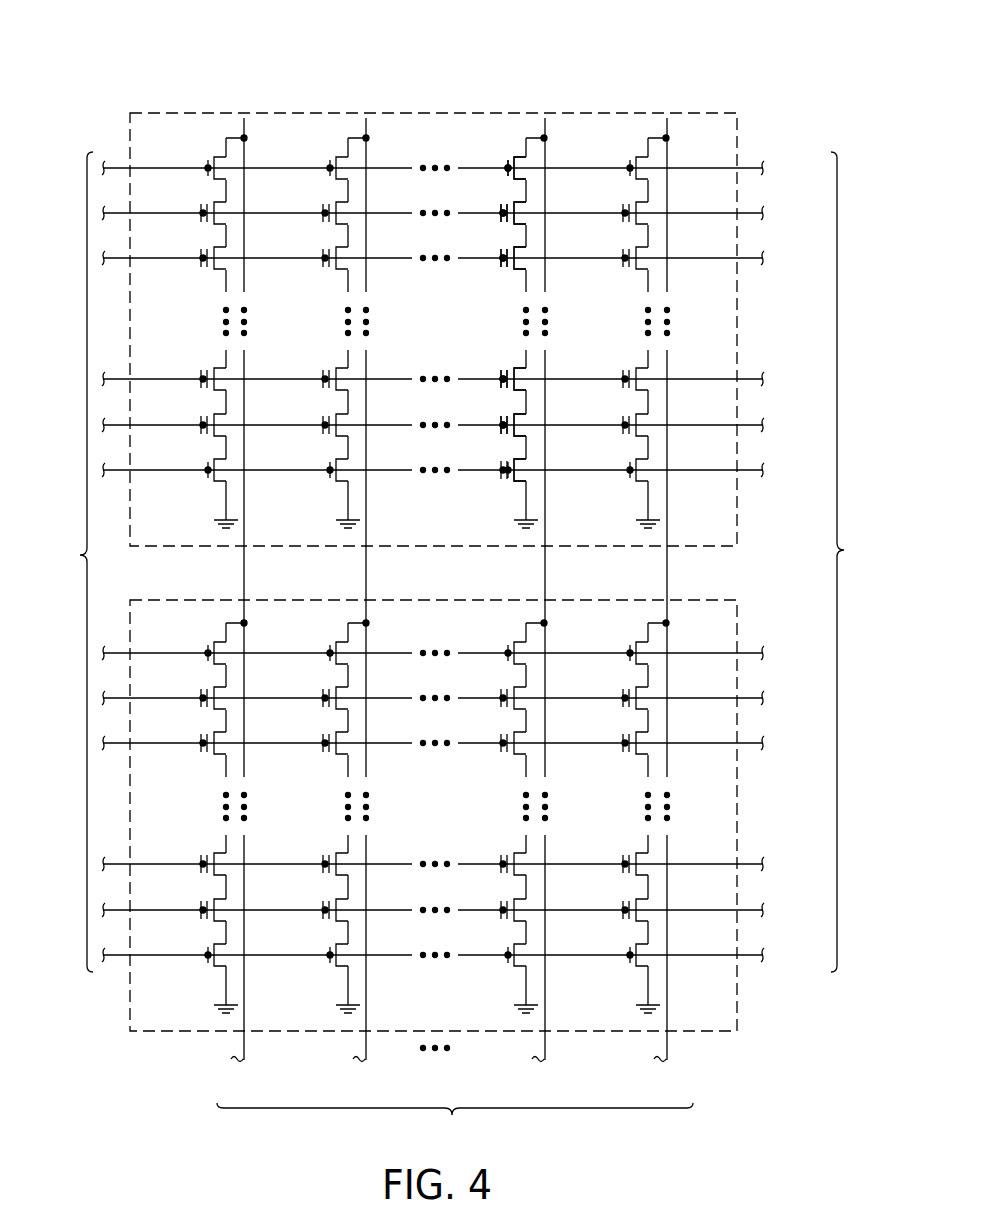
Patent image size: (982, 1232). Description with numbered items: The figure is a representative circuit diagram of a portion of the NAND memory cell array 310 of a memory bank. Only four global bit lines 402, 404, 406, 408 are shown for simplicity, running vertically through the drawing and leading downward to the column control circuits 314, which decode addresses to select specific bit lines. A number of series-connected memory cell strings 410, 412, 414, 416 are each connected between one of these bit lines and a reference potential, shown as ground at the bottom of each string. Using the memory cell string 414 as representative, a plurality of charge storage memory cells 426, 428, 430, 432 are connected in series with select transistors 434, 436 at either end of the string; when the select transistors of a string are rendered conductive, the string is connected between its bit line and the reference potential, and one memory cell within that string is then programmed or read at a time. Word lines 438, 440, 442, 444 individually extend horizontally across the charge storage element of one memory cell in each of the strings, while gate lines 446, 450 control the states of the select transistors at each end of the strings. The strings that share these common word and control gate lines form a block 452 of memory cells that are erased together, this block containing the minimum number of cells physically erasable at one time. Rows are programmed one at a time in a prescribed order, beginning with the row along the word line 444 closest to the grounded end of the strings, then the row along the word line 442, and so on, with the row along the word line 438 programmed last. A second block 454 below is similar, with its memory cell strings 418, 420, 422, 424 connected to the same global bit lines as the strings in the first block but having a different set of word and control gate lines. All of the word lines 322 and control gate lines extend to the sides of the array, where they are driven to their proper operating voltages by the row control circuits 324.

The memory cell array 310 is at (162, 77).
The block 452 is at (408, 103).
The second block 454 is at (523, 1038).
The global bit line 402 is at (246, 157).
The global bit line 404 is at (368, 157).
The global bit line 406 is at (546, 157).
The global bit line 408 is at (669, 156).
The memory cell string 410 is at (210, 352).
The memory cell string 412 is at (332, 352).
The memory cell string 414 is at (510, 352).
The memory cell string 416 is at (632, 352).
The memory cell string 418 is at (210, 837).
The memory cell string 420 is at (332, 837).
The memory cell string 422 is at (510, 837).
The memory cell string 424 is at (632, 837).
The charge storage memory cell 426 is at (510, 205).
The charge storage memory cell 428 is at (510, 250).
The charge storage memory cell 430 is at (510, 371).
The charge storage memory cell 432 is at (510, 417).
The select transistor 434 is at (510, 462).
The select transistor 436 is at (511, 158).
The word line 438 is at (747, 213).
The word line 440 is at (747, 258).
The word line 442 is at (747, 379).
The word line 444 is at (747, 425).
The select gate line 446 is at (747, 168).
The select gate line 450 is at (747, 470).
The column control circuits 314 is at (455, 1126).
The word lines 322 is at (450, 562).
The row control circuits 324 is at (450, 562).